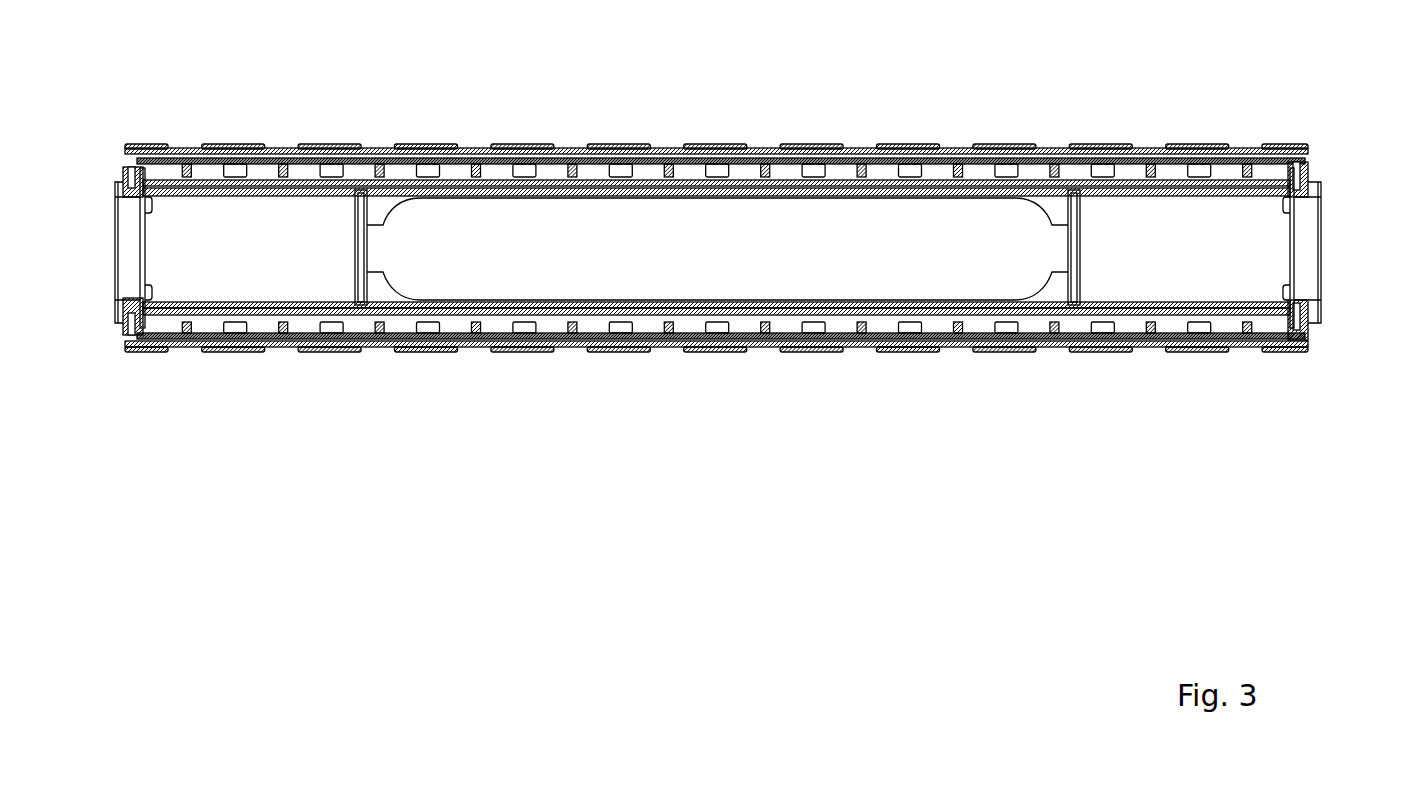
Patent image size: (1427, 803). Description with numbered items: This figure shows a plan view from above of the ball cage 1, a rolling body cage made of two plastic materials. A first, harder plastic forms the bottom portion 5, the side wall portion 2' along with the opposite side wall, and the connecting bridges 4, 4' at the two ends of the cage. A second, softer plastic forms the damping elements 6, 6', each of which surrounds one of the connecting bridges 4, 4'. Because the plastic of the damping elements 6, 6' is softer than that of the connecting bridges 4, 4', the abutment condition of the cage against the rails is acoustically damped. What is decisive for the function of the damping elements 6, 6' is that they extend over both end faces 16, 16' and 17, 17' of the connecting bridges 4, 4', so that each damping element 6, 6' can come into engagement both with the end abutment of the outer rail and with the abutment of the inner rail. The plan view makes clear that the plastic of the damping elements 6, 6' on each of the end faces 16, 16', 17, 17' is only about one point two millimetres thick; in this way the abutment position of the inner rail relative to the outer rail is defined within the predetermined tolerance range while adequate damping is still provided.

The ball cage 1 is at (1176, 426).
The side wall portion 2' is at (716, 92).
The bottom portion 5 is at (1043, 202).
The end face 16 is at (101, 164).
The end face 17 is at (191, 242).
The damping element 6 is at (95, 248).
The connecting bridge 4 is at (114, 347).
The end face 16' is at (1357, 187).
The end face 17' is at (1255, 239).
The damping element 6' is at (1333, 248).
The connecting bridge 4' is at (1342, 338).